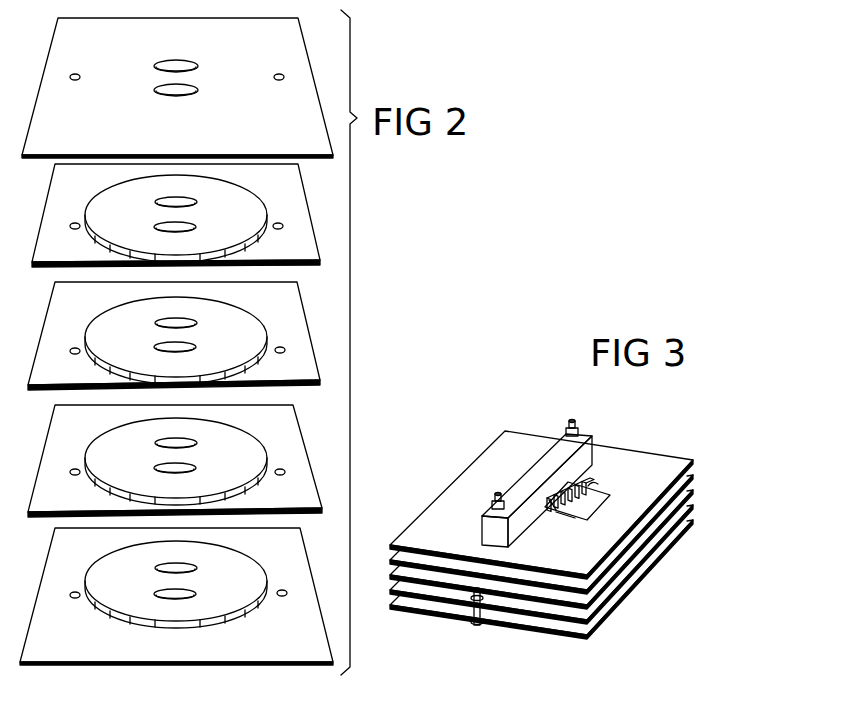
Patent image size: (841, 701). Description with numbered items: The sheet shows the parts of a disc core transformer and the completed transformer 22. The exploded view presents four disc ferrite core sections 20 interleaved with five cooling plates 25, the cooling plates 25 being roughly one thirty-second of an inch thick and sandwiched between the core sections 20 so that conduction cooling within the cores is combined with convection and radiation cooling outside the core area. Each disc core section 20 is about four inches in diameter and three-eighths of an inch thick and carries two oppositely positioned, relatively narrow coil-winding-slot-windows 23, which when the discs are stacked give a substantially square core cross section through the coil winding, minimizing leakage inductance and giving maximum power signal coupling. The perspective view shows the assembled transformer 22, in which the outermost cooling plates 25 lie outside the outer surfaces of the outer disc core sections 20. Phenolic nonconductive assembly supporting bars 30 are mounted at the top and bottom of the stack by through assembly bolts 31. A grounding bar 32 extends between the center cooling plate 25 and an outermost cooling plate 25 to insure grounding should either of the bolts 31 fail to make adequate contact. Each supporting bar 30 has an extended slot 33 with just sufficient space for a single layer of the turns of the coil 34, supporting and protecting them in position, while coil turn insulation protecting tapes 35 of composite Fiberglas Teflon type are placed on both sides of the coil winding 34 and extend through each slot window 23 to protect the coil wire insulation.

In FIG. 2, the disc ferrite core section 20 is at (100, 203).
In FIG. 3, the transformer 22 is at (560, 529).
In FIG. 2, the coil-winding-slot-window 23 is at (197, 226).
In FIG. 3, the coil-winding-slot-window 23 is at (590, 486).
In FIG. 2, the cooling plate 25 is at (292, 50).
In FIG. 3, the cooling plate 25 is at (696, 525).
In FIG. 3, the assembly supporting bar 30 is at (592, 444).
In FIG. 3, the assembly bolt 31 is at (571, 427).
In FIG. 3, the grounding bar 32 is at (476, 627).
In FIG. 3, the extended slot 33 is at (549, 500).
In FIG. 3, the coil 34 is at (572, 485).
In FIG. 3, the coil turn insulation protecting tape 35 is at (571, 517).